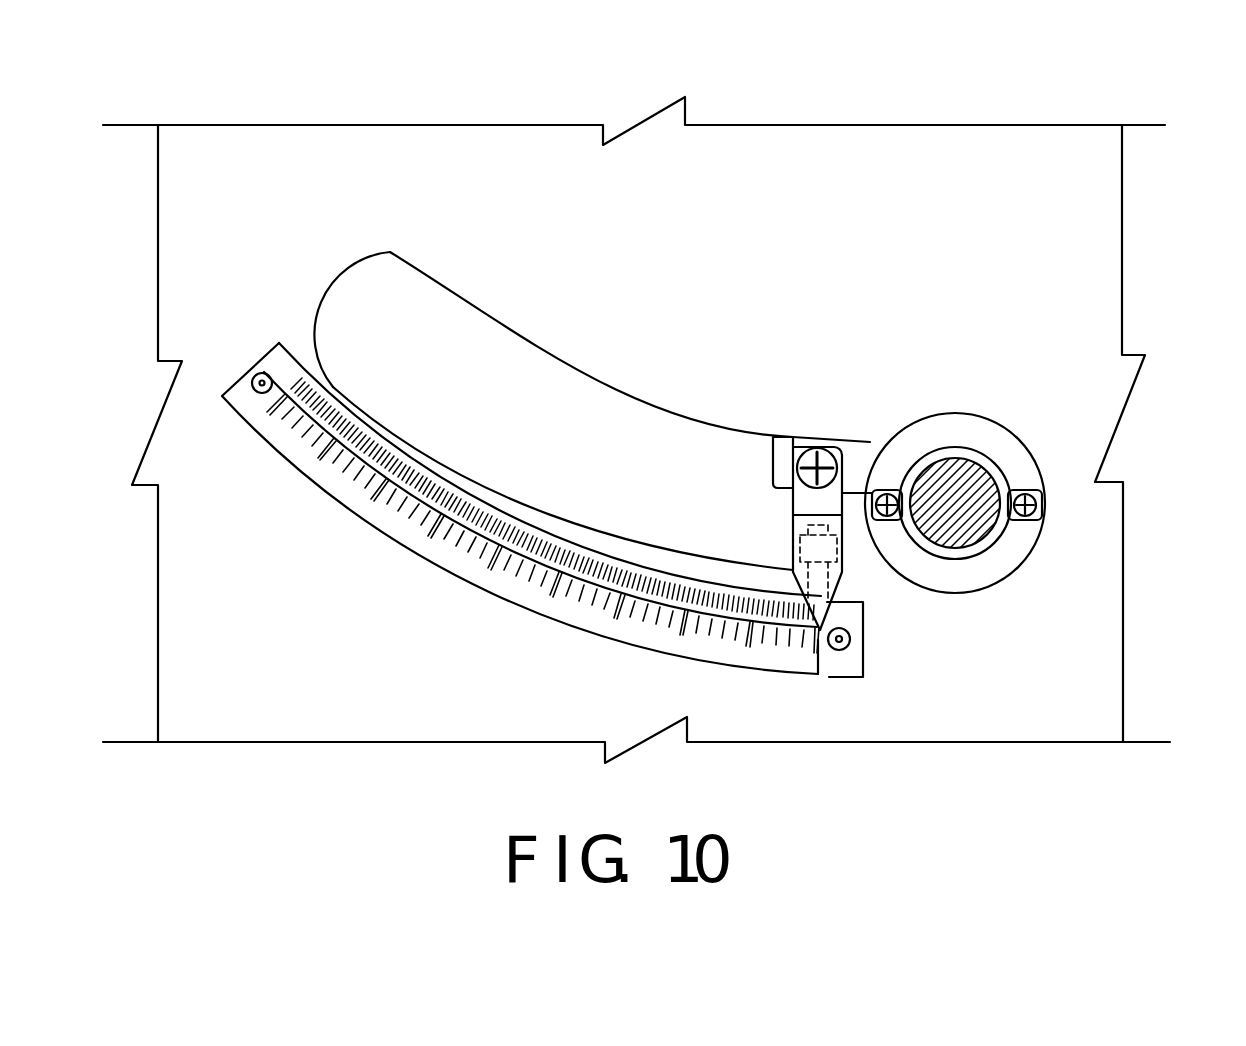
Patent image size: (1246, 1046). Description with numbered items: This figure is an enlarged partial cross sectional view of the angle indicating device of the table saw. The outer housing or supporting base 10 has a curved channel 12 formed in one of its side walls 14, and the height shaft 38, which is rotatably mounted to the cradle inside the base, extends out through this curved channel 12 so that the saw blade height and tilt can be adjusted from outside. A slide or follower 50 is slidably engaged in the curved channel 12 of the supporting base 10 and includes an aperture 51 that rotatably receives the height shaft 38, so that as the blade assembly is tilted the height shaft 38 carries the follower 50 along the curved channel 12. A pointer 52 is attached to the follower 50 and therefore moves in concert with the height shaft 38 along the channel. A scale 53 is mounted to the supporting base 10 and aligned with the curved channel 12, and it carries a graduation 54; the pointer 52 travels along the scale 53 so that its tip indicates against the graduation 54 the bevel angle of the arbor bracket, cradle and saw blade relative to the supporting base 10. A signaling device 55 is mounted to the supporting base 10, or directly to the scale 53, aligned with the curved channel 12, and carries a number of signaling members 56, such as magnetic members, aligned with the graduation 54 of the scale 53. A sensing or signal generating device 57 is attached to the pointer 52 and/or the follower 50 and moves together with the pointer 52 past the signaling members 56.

The supporting base 10 is at (1053, 150).
The curved channel 12 is at (436, 305).
The side wall 14 is at (242, 710).
The height shaft 38 is at (967, 527).
The follower 50 is at (870, 462).
The aperture 51 is at (990, 478).
The pointer 52 is at (845, 548).
The scale 53 is at (462, 590).
The graduation 54 is at (553, 612).
The signaling device 55 is at (278, 345).
The signaling members 56 is at (320, 387).
The signal generating device 57 is at (822, 588).